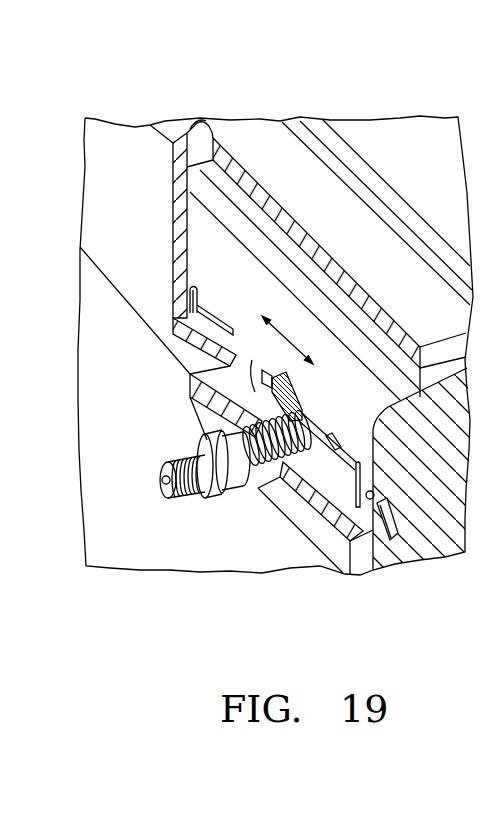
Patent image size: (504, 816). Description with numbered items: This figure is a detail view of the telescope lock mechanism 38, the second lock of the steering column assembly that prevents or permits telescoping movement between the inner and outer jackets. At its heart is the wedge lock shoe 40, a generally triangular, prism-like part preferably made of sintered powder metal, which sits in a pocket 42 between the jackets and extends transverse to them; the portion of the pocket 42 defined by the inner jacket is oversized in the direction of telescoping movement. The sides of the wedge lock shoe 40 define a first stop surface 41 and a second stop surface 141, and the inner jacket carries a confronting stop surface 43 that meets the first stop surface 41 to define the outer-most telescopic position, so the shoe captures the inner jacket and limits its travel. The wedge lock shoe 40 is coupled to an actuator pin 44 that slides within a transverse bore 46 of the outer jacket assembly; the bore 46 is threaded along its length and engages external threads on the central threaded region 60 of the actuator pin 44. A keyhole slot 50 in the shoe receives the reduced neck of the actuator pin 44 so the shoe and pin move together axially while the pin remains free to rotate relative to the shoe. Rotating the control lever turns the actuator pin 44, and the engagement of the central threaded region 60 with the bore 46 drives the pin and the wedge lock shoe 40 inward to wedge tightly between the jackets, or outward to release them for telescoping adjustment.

The telescope lock mechanism 38 is at (192, 508).
The wedge lock shoe 40 is at (262, 400).
The first stop surface 41 is at (250, 400).
The pocket 42 is at (240, 345).
The stop surface 43 is at (190, 375).
The actuator pin 44 is at (230, 488).
The transverse bore 46 is at (252, 466).
The keyhole slot 50 is at (308, 400).
The central threaded region 60 is at (286, 466).
The second stop surface 141 is at (373, 480).